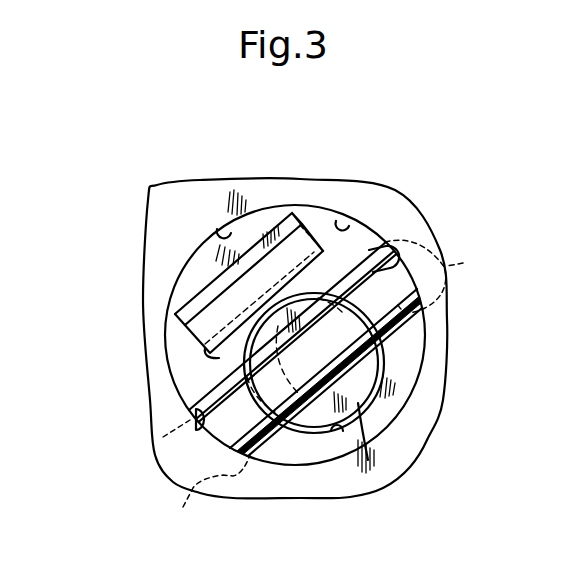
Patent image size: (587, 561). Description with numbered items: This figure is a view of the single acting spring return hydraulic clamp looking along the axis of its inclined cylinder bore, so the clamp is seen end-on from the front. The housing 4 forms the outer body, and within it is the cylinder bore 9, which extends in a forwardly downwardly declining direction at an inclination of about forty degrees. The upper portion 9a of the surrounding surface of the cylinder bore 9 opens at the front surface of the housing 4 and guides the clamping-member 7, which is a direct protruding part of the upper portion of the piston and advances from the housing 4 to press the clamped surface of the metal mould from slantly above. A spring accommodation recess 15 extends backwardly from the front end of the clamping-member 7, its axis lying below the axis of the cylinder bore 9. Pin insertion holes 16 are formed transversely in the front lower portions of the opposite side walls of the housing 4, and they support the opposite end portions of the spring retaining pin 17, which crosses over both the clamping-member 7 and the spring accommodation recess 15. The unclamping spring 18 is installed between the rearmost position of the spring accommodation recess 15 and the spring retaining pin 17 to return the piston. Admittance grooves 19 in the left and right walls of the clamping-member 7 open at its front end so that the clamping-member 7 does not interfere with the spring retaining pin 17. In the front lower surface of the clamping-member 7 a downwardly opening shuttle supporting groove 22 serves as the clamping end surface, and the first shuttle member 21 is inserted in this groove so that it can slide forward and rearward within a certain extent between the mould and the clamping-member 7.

The housing 4 is at (195, 190).
The clamping-member 7 is at (212, 252).
The cylinder bore 9 is at (342, 219).
The upper portion of the surrounding surface of the cylinder bore 9a is at (225, 228).
The spring accommodation recess 15 is at (343, 431).
The pin insertion holes 16 is at (329, 388).
The spring retaining pin 17 is at (270, 450).
The unclamping spring 18 is at (362, 416).
The admittance grooves 19 is at (397, 247).
The first shuttle member 21 is at (283, 205).
The shuttle supporting groove 22 is at (203, 295).